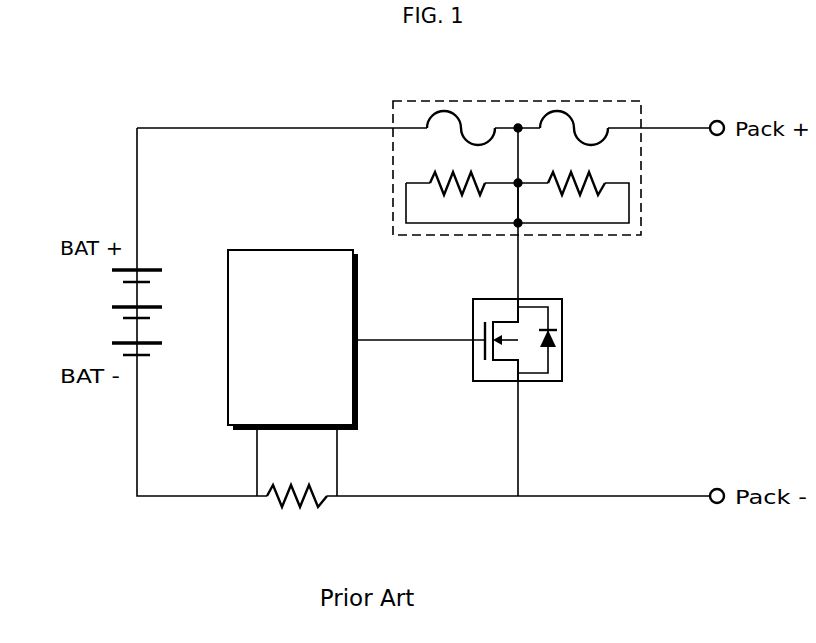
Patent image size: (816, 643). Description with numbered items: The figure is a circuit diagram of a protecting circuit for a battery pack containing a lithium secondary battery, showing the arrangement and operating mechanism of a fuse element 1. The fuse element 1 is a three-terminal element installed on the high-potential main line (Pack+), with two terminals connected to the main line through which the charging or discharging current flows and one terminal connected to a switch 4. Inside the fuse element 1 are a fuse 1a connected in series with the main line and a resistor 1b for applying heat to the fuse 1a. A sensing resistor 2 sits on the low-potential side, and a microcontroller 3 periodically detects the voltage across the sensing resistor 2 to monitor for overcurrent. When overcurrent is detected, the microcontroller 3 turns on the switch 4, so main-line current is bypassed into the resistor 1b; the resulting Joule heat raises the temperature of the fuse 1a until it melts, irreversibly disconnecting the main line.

The fuse element 1 is at (611, 101).
The fuse 1a is at (442, 110).
The resistor 1b is at (452, 197).
The sensing resistor 2 is at (291, 508).
The microcontroller 3 is at (291, 250).
The switch 4 is at (563, 341).